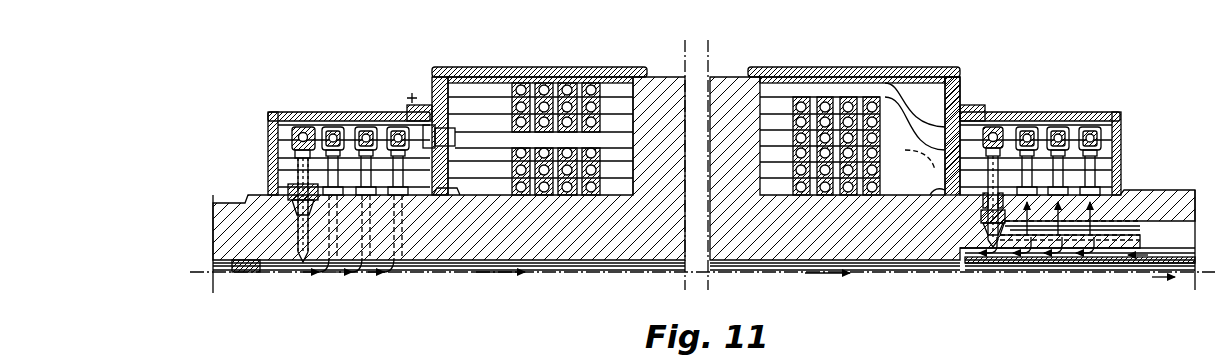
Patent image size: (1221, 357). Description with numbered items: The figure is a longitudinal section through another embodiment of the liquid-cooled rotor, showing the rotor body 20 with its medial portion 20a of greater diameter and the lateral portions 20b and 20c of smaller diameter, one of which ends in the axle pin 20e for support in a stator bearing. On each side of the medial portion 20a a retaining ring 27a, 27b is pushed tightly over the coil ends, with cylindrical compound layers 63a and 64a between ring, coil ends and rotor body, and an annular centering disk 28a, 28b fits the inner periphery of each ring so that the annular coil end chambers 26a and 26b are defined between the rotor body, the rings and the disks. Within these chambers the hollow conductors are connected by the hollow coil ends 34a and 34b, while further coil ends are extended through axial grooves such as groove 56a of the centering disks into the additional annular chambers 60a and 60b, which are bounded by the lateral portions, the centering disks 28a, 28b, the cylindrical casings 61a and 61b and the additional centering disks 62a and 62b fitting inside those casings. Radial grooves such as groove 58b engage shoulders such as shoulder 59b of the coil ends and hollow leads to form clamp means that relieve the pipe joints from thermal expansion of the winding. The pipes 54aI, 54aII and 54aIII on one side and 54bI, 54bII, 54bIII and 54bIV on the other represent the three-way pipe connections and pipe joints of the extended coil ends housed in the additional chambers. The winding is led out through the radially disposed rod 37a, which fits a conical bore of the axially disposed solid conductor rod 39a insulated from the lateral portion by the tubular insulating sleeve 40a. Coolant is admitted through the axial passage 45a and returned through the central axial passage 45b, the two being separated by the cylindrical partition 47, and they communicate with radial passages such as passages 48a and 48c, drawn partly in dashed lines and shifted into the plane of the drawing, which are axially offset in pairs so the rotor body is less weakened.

The rotor body 20 is at (668, 84).
The medial portion 20a is at (665, 248).
The lateral portion 20b is at (1132, 205).
The lateral portion 20c is at (442, 243).
The axle pin 20e is at (222, 214).
The annular coil end chamber 26a is at (923, 97).
The annular coil end chamber 26b is at (468, 98).
The retaining ring 27a is at (757, 58).
The retaining ring 27b is at (552, 68).
The annular centering disk 28a is at (945, 193).
The annular centering disk 28b is at (437, 189).
The hollow coil end 34a is at (772, 185).
The hollow coil end 34b is at (615, 187).
The radially disposed rod 37a is at (992, 129).
The axially disposed solid conductor rod 39a is at (1077, 227).
The tubular insulating sleeve 40a is at (1107, 237).
The axial passage 45a is at (1017, 250).
The axial passage 45b is at (545, 266).
The cylindrical partition 47 is at (1180, 263).
The radial passage 48a is at (940, 265).
The radial passage 48c is at (292, 250).
The pipe 54aI is at (1030, 130).
The pipe 54aII is at (1058, 130).
The pipe 54aIII is at (1090, 130).
The pipe 54bI is at (397, 130).
The pipe 54bII is at (360, 130).
The pipe 54bIII is at (332, 127).
The pipe 54bIV is at (312, 90).
The axial groove 56a is at (945, 90).
The radial groove 58b is at (450, 92).
The shoulder 59b is at (446, 140).
The additional annular chamber 60a is at (1107, 138).
The additional annular chamber 60b is at (283, 138).
The cylindrical casing 61a is at (1114, 113).
The cylindrical casing 61b is at (270, 113).
The additional centering disk 62a is at (1117, 163).
The additional centering disk 62b is at (268, 178).
The cylindrical compound layer 63a is at (808, 80).
The cylindrical compound layer 64a is at (845, 190).